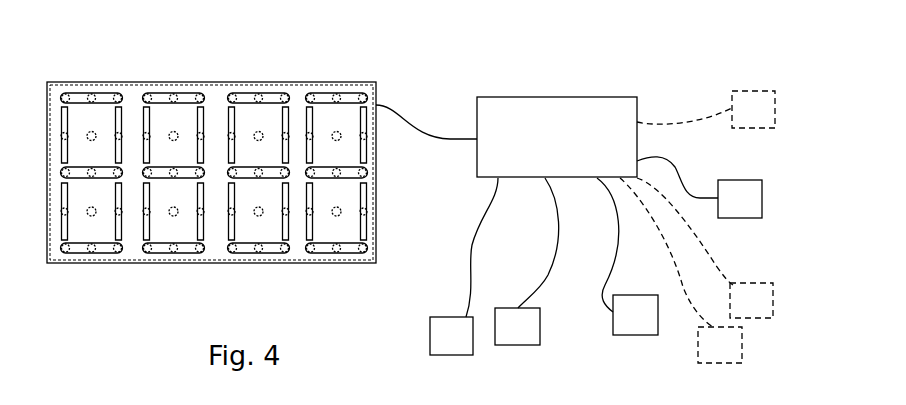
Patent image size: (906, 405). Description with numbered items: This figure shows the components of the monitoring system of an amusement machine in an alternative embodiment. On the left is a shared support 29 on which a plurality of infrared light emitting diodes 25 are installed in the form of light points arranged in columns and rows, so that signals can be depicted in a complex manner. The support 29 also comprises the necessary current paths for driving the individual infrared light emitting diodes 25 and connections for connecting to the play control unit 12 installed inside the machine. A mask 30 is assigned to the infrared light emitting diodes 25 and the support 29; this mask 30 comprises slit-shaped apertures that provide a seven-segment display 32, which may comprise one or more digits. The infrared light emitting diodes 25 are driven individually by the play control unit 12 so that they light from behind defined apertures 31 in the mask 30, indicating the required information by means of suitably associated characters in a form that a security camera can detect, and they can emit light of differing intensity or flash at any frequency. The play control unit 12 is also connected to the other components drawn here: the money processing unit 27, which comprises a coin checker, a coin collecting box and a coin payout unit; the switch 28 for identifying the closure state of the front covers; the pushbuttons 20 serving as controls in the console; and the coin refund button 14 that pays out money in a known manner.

The play control unit 12 is at (546, 148).
The coin refund button 14 is at (624, 325).
The pushbuttons 20 is at (728, 210).
The infrared light emitting diodes 25 is at (66, 97).
The money processing unit 27 is at (506, 336).
The switch 28 is at (439, 346).
The support 29 is at (325, 80).
The mask 30 is at (133, 255).
The apertures 31 is at (78, 255).
The 7-segment display 32 is at (357, 264).